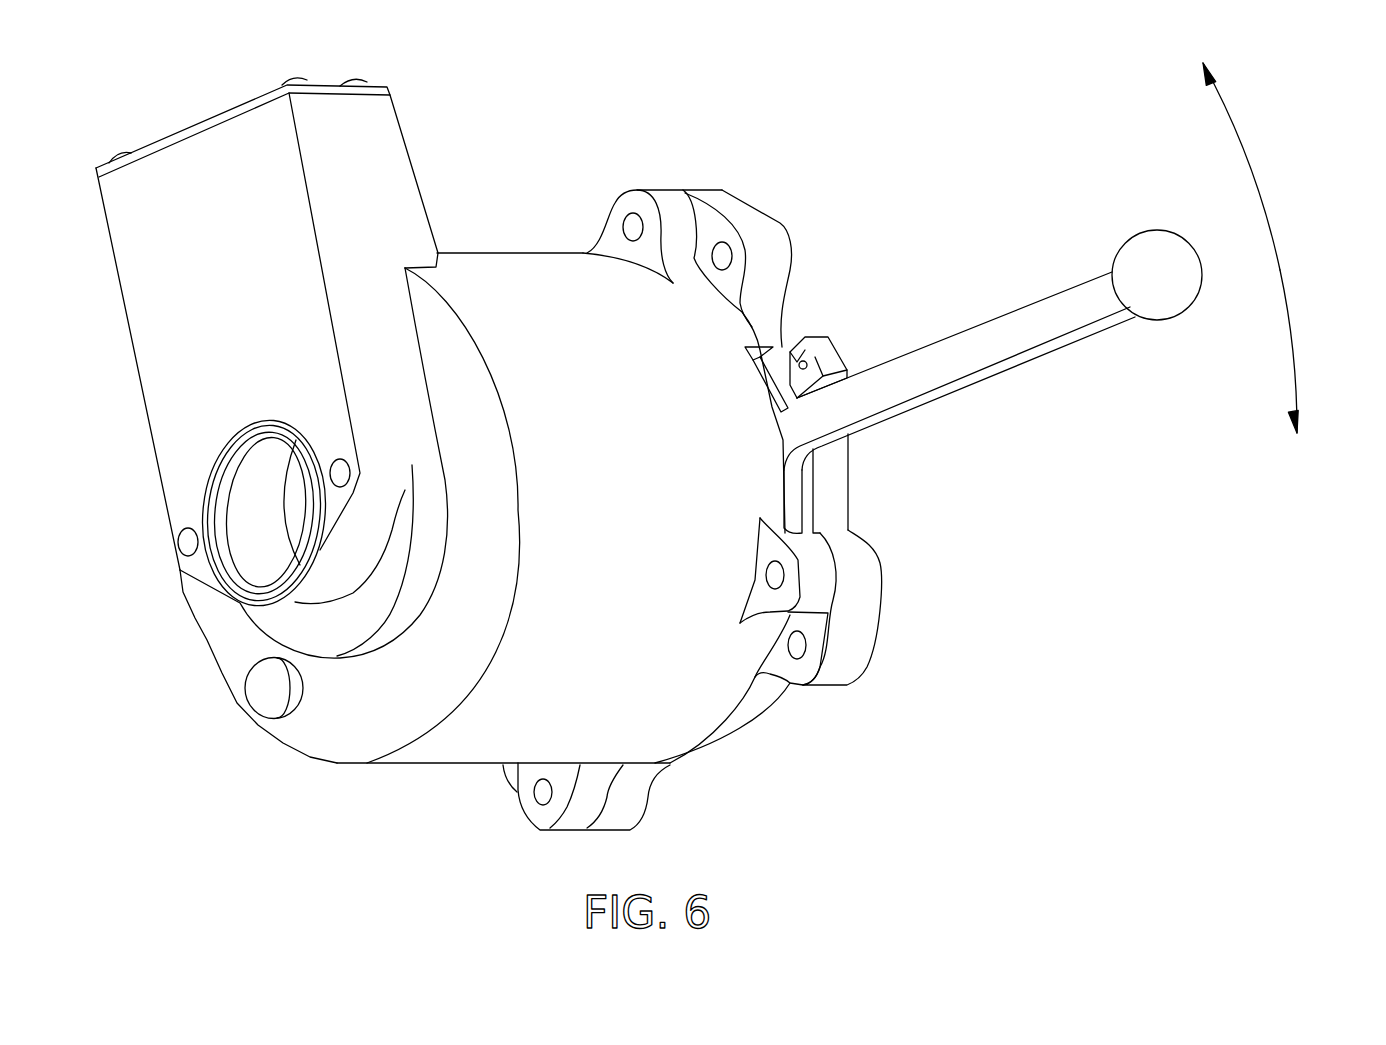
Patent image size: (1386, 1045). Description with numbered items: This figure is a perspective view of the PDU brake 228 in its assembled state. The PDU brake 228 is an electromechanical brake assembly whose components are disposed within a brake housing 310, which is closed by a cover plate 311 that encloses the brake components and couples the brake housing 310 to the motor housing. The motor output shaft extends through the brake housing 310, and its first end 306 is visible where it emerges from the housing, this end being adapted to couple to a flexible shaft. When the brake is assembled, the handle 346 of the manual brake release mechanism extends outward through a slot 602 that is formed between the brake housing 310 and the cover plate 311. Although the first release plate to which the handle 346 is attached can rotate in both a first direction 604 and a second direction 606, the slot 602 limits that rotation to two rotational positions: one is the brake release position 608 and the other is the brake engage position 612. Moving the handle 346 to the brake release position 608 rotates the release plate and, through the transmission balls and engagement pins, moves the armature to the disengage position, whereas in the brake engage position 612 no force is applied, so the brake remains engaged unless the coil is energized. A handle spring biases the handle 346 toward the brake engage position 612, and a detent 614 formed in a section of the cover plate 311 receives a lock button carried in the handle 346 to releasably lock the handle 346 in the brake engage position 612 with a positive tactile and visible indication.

The PDU brake 228 is at (578, 165).
The first end of the output shaft 306 is at (295, 468).
The brake housing 310 is at (392, 125).
The cover plate 311 is at (863, 643).
The handle 346 is at (1100, 323).
The slot 602 is at (795, 493).
The first direction 604 is at (1240, 133).
The second direction 606 is at (1293, 350).
The brake release position 608 is at (795, 528).
The brake engage position 612 is at (755, 357).
The detent 614 is at (794, 350).